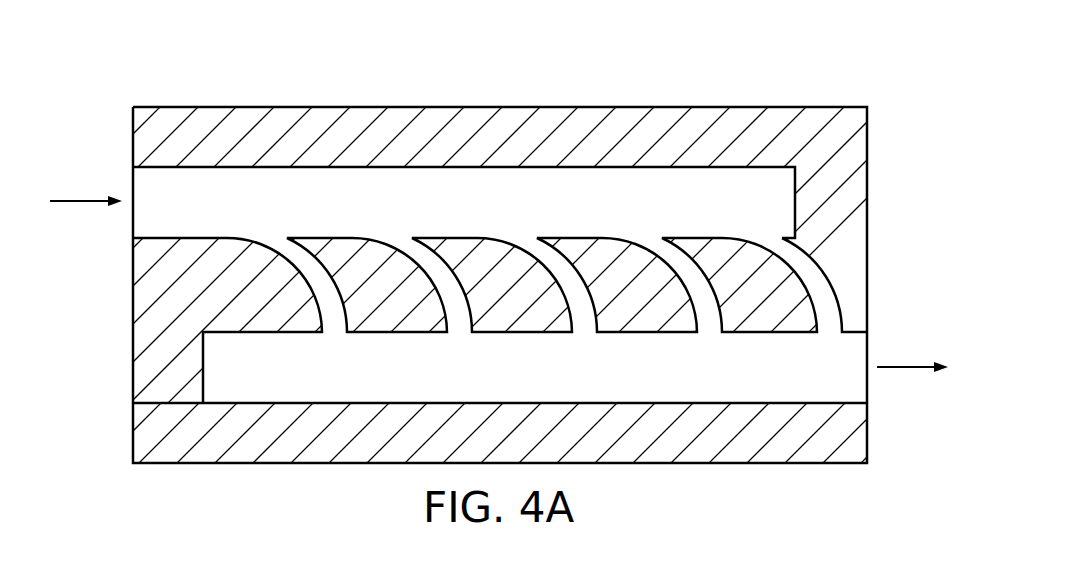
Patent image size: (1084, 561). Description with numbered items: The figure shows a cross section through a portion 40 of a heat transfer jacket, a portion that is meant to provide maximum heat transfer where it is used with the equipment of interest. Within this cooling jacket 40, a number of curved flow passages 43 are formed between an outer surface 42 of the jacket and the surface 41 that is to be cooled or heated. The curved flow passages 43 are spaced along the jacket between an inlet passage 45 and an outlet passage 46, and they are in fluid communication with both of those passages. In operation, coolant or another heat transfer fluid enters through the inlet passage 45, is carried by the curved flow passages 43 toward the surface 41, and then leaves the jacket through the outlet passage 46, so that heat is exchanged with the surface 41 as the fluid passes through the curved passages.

The portion of heat transfer jacket 40 is at (531, 274).
The surface 41 is at (698, 478).
The outer surface of the cooling jacket 42 is at (365, 96).
The curved flow passages 43 is at (270, 238).
The inlet passage 45 is at (80, 200).
The outlet passage 46 is at (905, 370).